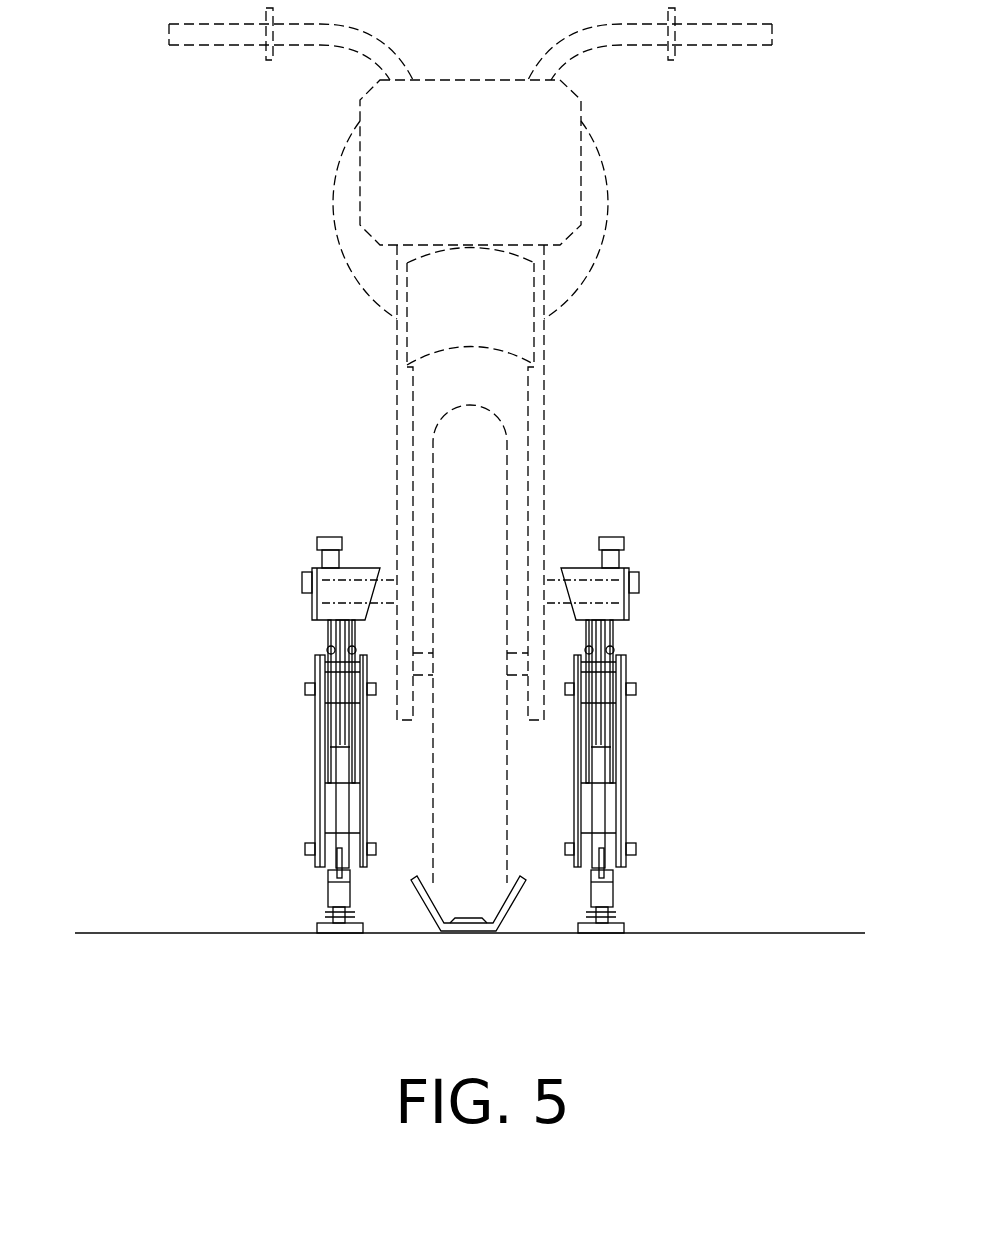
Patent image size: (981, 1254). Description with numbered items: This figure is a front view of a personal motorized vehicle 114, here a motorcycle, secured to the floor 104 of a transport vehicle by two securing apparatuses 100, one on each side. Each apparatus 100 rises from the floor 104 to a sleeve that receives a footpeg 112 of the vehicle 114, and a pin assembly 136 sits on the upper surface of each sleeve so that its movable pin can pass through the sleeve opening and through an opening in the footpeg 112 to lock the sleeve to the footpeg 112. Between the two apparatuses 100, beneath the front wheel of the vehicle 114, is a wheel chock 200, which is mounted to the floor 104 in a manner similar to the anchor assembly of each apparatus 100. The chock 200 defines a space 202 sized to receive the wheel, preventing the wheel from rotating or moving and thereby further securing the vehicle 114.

The personal motorized vehicle securing apparatus 100 is at (277, 593).
The floor 104 is at (272, 966).
The footpeg 112 is at (328, 602).
The personal motorized vehicle 114 is at (395, 466).
The pin assembly 136 is at (318, 544).
The wheel chock 200 is at (470, 942).
The space 202 is at (470, 915).